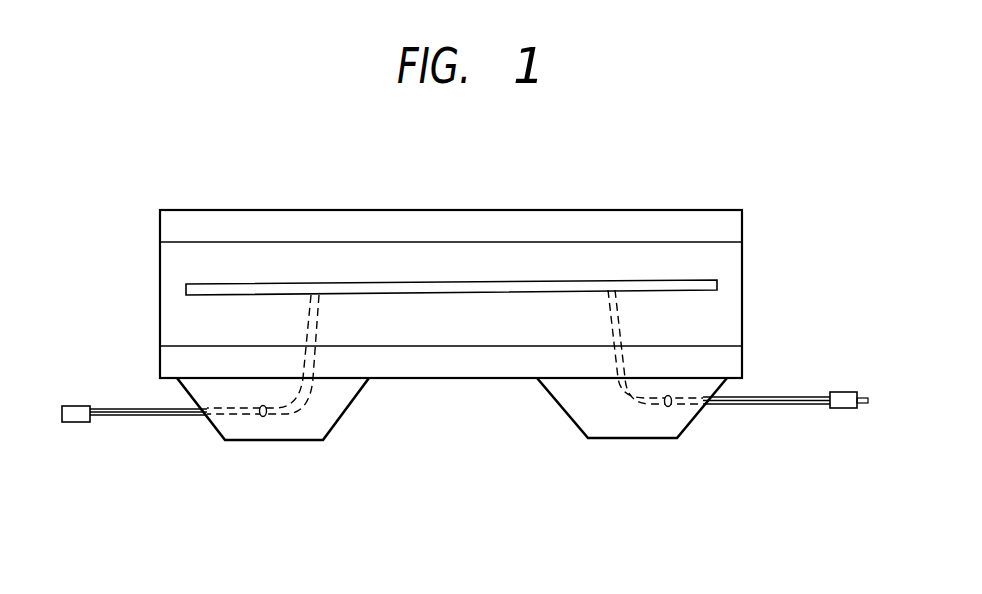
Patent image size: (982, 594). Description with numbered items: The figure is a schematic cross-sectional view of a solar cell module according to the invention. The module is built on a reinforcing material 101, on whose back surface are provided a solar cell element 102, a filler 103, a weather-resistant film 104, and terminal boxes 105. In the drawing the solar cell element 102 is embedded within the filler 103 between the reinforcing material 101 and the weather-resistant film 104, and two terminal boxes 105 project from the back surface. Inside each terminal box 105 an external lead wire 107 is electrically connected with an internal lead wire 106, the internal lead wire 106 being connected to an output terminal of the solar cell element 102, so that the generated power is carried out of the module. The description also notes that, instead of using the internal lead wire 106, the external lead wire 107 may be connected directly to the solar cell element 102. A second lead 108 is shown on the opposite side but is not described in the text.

The reinforcing material 101 is at (468, 368).
The solar cell element 102 is at (481, 281).
The filler 103 is at (643, 247).
The weather-resistant film 104 is at (393, 209).
The terminal box 105 is at (303, 429).
The internal lead wire 106 is at (608, 316).
The external lead wire 107 is at (773, 403).
The left connector lead 108 is at (208, 423).